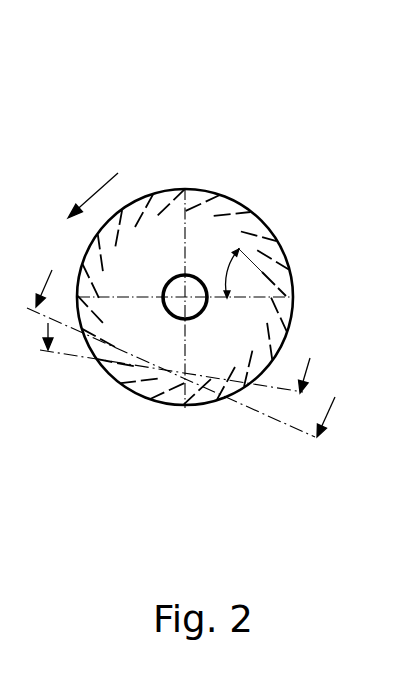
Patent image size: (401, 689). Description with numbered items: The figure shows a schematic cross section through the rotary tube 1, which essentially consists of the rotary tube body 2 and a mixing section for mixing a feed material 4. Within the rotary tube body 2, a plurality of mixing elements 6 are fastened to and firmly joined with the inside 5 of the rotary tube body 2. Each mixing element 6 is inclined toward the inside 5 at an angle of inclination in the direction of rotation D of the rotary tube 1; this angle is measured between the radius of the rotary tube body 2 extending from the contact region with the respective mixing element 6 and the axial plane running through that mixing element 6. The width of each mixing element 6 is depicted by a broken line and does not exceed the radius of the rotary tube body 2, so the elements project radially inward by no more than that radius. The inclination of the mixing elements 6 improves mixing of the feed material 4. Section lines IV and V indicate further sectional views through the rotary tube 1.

The rotary tube 1 is at (82, 111).
The rotary tube body 2 is at (218, 197).
The feed material 4 is at (165, 404).
The inside 5 is at (289, 270).
The mixing element 6 is at (266, 226).
The direction of rotation D is at (92, 190).
The section line IV- IV is at (188, 348).
The section line V- V is at (173, 357).